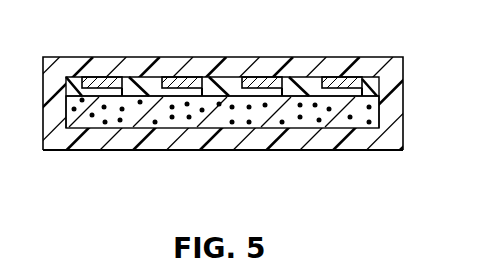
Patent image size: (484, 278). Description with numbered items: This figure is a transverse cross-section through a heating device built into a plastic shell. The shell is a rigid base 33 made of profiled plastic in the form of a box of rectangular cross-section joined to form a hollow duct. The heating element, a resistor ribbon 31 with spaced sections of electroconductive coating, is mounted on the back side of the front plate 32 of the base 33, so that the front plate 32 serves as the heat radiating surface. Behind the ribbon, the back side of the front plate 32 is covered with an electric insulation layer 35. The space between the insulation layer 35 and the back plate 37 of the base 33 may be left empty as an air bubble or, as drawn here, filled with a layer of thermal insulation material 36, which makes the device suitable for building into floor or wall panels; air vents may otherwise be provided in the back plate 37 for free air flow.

The resistor ribbon 31 is at (184, 78).
The front plate 32 is at (53, 57).
The rigid base 33 is at (65, 151).
The electric insulation layer 35 is at (316, 84).
The thermal insulation material 36 is at (351, 128).
The back plate 37 is at (190, 140).